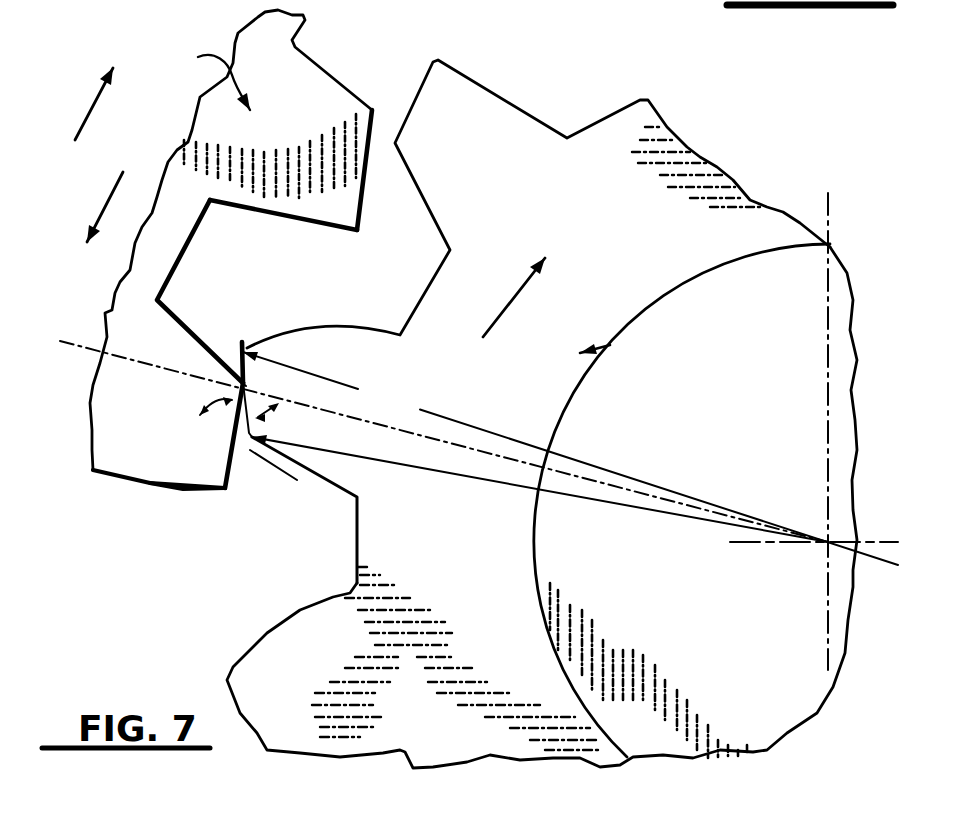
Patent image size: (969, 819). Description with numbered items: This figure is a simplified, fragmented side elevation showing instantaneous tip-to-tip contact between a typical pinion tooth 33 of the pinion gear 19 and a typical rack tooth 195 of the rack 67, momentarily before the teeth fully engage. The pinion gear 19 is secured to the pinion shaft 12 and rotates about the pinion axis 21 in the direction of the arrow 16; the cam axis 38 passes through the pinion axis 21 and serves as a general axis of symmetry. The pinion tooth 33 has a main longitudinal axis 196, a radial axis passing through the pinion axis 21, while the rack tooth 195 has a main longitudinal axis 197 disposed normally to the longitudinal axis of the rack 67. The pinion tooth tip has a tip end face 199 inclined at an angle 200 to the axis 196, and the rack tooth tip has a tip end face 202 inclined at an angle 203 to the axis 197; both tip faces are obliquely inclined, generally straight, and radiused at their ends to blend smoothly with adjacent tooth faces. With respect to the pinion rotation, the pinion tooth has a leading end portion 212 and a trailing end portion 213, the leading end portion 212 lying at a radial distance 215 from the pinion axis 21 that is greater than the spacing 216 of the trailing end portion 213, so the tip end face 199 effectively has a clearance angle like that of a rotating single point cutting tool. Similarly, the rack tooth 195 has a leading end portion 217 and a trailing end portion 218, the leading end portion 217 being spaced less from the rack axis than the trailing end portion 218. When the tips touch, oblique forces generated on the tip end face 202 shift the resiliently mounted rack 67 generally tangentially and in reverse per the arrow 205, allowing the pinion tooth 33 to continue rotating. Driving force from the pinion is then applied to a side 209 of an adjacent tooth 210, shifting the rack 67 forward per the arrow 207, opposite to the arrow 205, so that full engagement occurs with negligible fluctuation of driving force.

The pinion shaft 12 is at (737, 307).
The arrow indicating direction of rotation 16 is at (508, 307).
The pinion gear 19 is at (610, 345).
The pinion axis 21 is at (826, 543).
The pinion tooth 33 is at (335, 352).
The cam axis 38 is at (826, 438).
The rack 67 is at (208, 74).
The rack tooth 195 is at (158, 463).
The main longitudinal axis of pinion tooth 196 is at (373, 417).
The main longitudinal axis of rack tooth 197 is at (175, 423).
The tip end face of pinion tooth 199 is at (243, 375).
The angle of inclination of pinion tooth tip end face 200 is at (258, 417).
The tip end face of rack tooth 202 is at (238, 463).
The angle of inclination of rack tooth tip end face 203 is at (205, 395).
The arrow indicating rearward rack shift 205 is at (112, 193).
The arrow indicating forward rack shift 207 is at (91, 110).
The side of adjacent tooth 209 is at (263, 212).
The adjacent tooth 210 is at (313, 99).
The leading end portion of pinion tooth 212 is at (243, 347).
The trailing end portion of pinion tooth 213 is at (251, 449).
The radial distance of leading end portion 215 is at (460, 421).
The spacing of trailing end portion 216 is at (450, 472).
The leading end portion of rack tooth 217 is at (243, 385).
The trailing end portion of rack tooth 218 is at (231, 477).